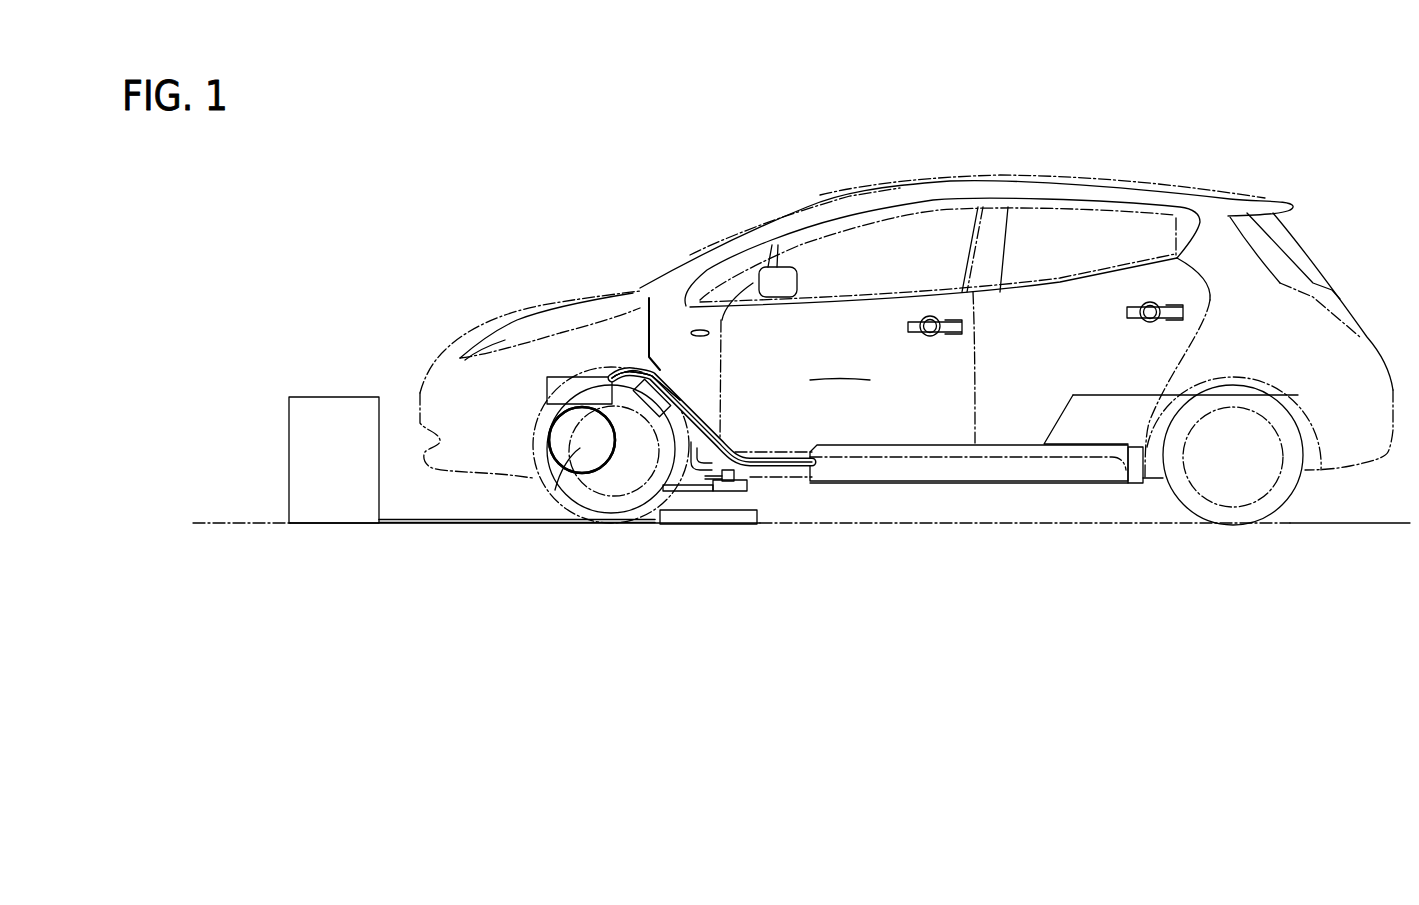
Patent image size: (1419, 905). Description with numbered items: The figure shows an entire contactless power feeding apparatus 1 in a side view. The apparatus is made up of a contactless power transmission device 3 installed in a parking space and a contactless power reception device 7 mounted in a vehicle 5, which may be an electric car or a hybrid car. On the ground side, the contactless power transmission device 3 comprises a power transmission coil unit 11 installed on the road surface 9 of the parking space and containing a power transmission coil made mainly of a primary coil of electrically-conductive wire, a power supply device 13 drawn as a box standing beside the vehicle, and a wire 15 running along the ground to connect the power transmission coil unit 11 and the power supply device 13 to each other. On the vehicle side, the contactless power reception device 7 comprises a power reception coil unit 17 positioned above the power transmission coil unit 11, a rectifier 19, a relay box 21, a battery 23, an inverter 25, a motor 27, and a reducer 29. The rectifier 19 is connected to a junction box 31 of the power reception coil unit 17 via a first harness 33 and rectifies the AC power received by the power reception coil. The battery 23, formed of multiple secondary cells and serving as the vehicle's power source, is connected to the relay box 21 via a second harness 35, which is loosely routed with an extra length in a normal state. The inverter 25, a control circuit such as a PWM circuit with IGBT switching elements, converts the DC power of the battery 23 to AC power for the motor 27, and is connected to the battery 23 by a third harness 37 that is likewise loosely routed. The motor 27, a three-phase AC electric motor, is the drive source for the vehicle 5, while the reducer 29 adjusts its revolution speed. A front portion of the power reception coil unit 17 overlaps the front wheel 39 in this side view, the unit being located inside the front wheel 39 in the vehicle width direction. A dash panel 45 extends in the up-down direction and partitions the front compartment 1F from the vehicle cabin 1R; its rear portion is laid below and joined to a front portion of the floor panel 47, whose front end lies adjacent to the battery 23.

The contactless power feeding apparatus 1 is at (906, 323).
The front compartment 1F is at (517, 360).
The vehicle cabin 1R is at (822, 385).
The contactless power transmission device 3 is at (283, 423).
The vehicle 5 is at (1124, 180).
The contactless power reception device 7 is at (690, 376).
The road surface 9 is at (1340, 524).
The power transmission coil unit 11 is at (690, 517).
The power supply device 13 is at (333, 405).
The wire 15 is at (455, 518).
The power reception coil unit 17 is at (665, 490).
The rectifier 19 is at (640, 370).
The relay box 21 is at (646, 386).
The battery 23 is at (1068, 472).
The inverter 25 is at (558, 385).
The motor 27 is at (585, 462).
The reducer 29 is at (582, 440).
The junction box 31 is at (728, 485).
The first harness 33 is at (660, 434).
The second harness 35 is at (708, 412).
The third harness 37 is at (632, 372).
The front wheel 39 is at (565, 490).
The dash panel 45 is at (652, 335).
The floor panel 47 is at (1055, 408).